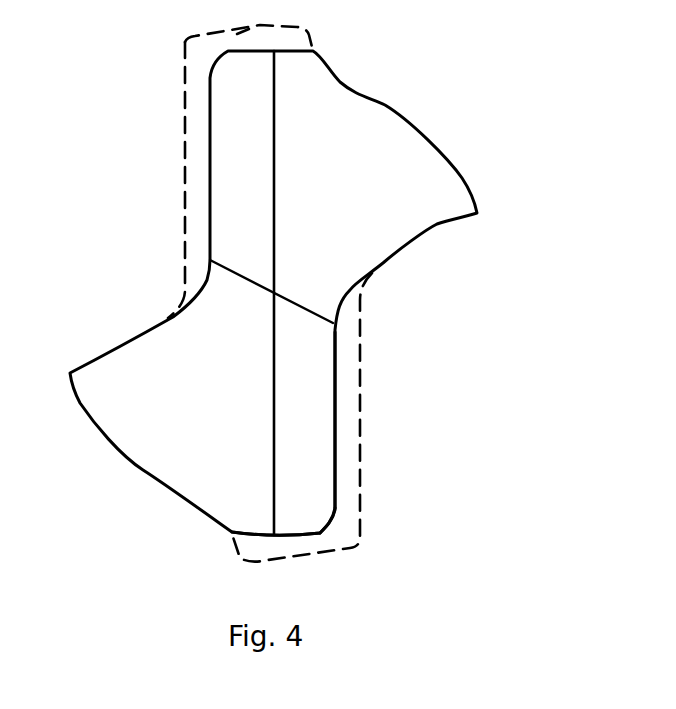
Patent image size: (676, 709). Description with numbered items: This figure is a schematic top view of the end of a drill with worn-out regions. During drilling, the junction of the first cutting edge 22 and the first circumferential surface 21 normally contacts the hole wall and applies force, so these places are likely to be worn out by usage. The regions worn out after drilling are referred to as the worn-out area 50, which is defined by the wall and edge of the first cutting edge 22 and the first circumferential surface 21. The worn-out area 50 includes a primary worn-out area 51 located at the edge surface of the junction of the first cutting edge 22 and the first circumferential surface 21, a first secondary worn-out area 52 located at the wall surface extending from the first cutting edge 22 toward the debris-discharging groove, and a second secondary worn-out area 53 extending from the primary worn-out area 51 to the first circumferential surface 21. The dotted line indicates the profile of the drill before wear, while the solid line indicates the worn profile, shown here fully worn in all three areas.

The first circumferential surface 21 is at (264, 563).
The first cutting edge 22 is at (362, 352).
The worn-out area 50 is at (512, 388).
The primary worn-out area 51 is at (346, 532).
The first secondary worn-out area 52 is at (346, 407).
The second secondary worn-out area 53 is at (272, 553).